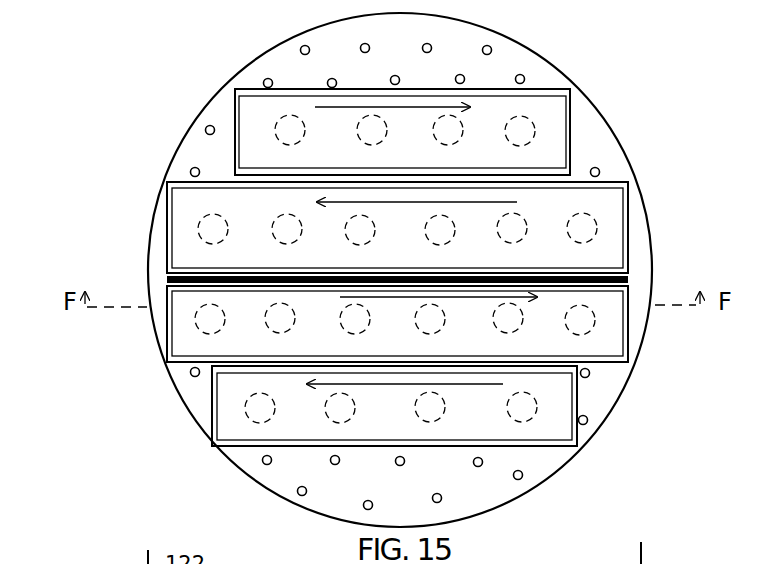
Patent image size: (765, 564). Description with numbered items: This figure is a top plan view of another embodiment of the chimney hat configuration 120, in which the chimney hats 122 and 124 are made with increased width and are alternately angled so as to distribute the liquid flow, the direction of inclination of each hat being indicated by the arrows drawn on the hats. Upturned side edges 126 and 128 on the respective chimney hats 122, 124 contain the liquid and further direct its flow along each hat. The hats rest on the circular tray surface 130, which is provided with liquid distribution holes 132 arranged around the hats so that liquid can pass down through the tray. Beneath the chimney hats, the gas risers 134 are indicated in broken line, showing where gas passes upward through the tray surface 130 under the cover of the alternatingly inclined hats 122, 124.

The chimney hat configuration 120 is at (84, 22).
The chimney hat 122 is at (253, 123).
The chimney hat 124 is at (183, 217).
The upturned side edge 126 is at (248, 90).
The upturned side edge 128 is at (180, 182).
The tray surface 130 is at (198, 148).
The liquid distribution hole 132 is at (303, 46).
The gas riser 134 is at (194, 317).